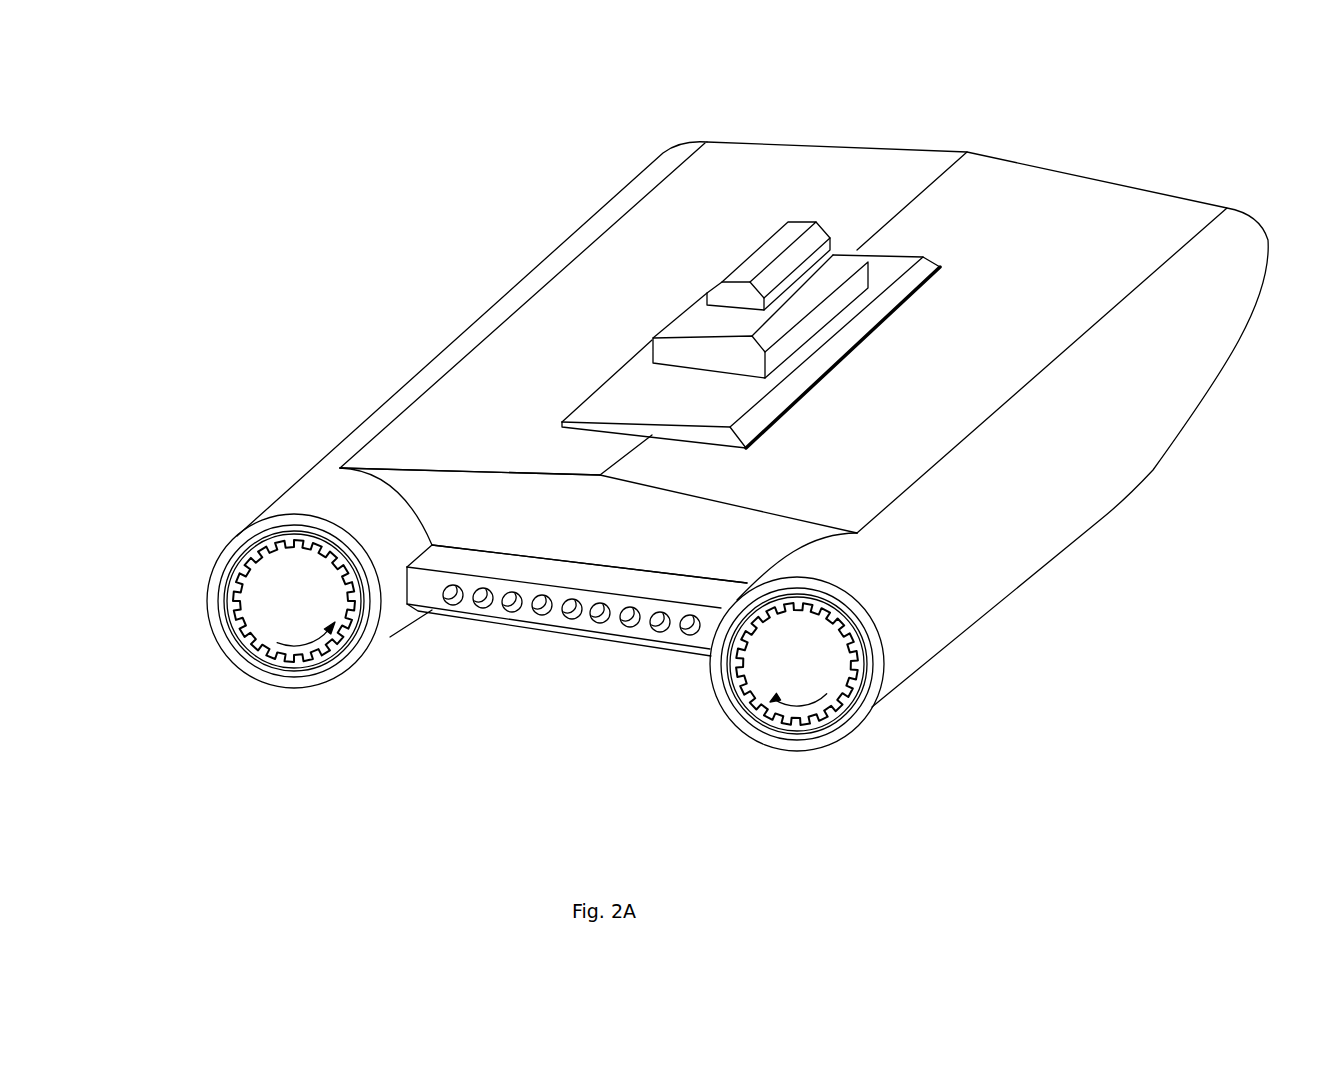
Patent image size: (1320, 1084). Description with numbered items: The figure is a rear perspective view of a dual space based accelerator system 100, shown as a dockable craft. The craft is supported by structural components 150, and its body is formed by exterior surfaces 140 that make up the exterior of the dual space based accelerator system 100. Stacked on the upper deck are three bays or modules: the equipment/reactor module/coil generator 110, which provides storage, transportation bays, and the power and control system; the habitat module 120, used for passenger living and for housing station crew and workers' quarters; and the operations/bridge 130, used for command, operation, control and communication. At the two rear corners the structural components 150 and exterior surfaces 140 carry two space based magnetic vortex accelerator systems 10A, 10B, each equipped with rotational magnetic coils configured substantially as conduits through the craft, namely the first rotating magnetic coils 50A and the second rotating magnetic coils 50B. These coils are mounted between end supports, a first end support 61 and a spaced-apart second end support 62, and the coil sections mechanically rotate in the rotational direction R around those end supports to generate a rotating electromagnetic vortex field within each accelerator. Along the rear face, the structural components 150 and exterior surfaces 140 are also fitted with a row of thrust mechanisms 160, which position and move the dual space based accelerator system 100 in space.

The dual space based accelerator system 100 is at (504, 225).
The equipment/reactor module/coil generator 110 is at (888, 267).
The habitat module 120 is at (843, 263).
The operations/bridge 130 is at (793, 232).
The exterior surfaces 140 is at (620, 547).
The structural components 150 is at (577, 651).
The thrust mechanisms 160 is at (448, 597).
The first roller assembly 10A is at (796, 718).
The second roller assembly 10B is at (258, 664).
The first rotating magnetic coils 50A is at (844, 685).
The second rotating magnetic coils 50B is at (258, 601).
The first end support 61 is at (862, 702).
The second end support 62 is at (233, 605).
The rotational direction R is at (332, 632).